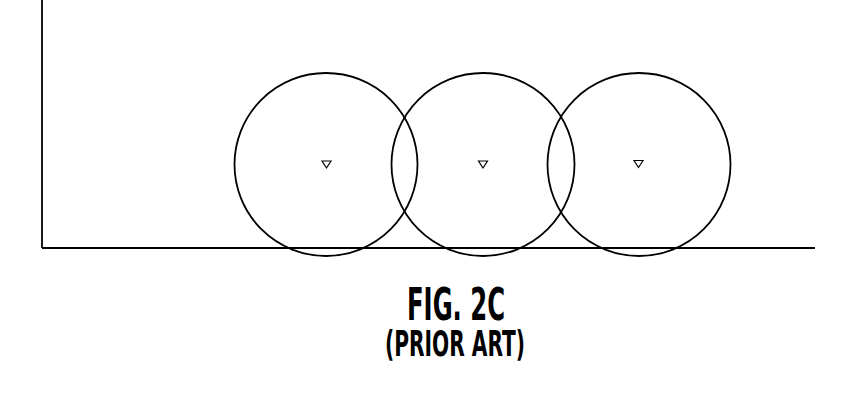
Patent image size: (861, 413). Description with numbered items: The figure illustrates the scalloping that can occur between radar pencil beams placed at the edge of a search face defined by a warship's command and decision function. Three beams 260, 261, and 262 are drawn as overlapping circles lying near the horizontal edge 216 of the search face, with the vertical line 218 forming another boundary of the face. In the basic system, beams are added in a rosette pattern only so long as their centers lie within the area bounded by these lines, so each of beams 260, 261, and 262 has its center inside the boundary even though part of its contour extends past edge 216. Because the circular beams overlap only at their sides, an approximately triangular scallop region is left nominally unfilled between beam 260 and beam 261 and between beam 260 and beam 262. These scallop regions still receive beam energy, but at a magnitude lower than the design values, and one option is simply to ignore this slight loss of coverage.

The vertical line 218 is at (44, 128).
The horizontal line 216 is at (138, 247).
The beam 262 is at (333, 72).
The beam 260 is at (483, 72).
The beam 261 is at (640, 72).